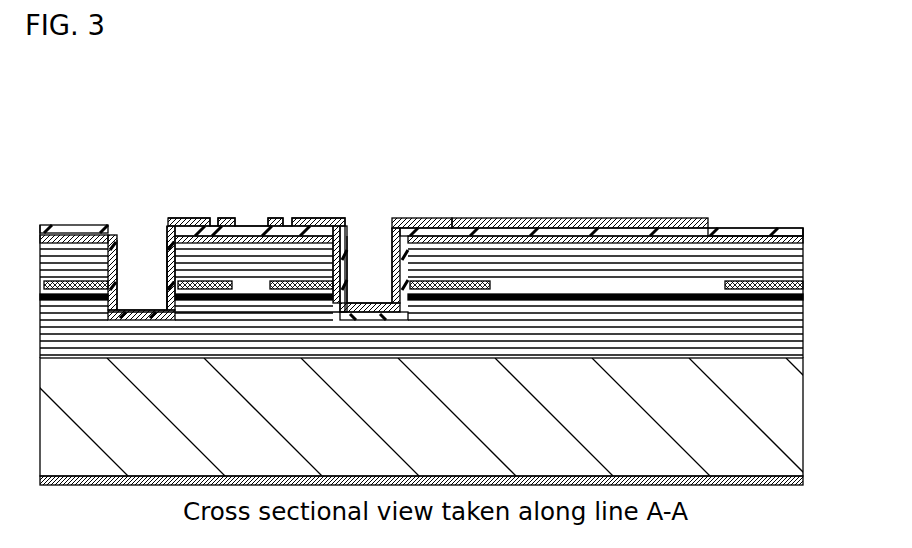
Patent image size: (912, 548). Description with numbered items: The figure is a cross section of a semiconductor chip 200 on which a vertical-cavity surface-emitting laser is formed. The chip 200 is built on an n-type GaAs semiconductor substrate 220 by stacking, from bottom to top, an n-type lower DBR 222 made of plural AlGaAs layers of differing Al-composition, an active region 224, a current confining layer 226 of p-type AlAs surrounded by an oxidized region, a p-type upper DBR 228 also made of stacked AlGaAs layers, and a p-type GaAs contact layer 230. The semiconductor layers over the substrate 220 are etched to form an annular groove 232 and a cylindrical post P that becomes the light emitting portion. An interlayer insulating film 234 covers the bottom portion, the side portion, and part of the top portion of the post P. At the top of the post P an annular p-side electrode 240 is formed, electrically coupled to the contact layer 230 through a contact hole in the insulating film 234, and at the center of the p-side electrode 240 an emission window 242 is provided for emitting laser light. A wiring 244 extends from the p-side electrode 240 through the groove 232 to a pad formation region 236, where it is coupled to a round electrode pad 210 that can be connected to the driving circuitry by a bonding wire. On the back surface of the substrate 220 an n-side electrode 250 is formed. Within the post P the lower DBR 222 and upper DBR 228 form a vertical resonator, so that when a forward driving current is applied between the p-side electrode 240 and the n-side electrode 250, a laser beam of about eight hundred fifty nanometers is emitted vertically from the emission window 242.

The semiconductor chip 200 is at (410, 57).
The electrode pad 210 is at (655, 216).
The semiconductor substrate 220 is at (803, 410).
The lower DBR 222 is at (785, 306).
The active region 224 is at (803, 297).
The current confining layer 226 is at (803, 284).
The upper DBR 228 is at (785, 248).
The contact layer 230 is at (803, 238).
The groove 232 is at (145, 272).
The interlayer insulating film 234 is at (95, 224).
The pad formation region 236 is at (512, 187).
The p-side electrode 240 is at (299, 216).
The emission window 242 is at (249, 216).
The wiring 244 is at (439, 216).
The n-side electrode 250 is at (803, 482).
The post P is at (197, 186).